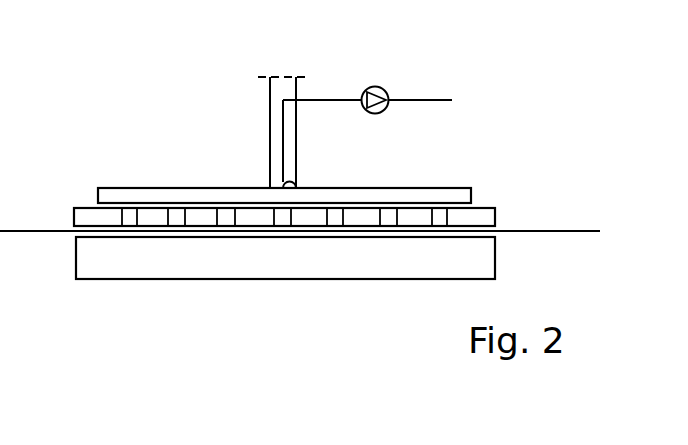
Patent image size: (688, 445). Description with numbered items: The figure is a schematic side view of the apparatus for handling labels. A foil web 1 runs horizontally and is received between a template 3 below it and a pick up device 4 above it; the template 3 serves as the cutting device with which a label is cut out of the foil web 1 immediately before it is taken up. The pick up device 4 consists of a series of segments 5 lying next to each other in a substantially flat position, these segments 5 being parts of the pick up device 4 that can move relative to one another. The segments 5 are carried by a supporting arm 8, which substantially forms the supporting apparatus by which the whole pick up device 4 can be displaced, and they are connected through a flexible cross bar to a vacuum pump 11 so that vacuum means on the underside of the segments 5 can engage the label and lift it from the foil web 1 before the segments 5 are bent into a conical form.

The foil web 1 is at (561, 216).
The template 3 is at (362, 279).
The pick up device 4 is at (472, 161).
The segments 5 is at (203, 217).
The supporting arm 8 is at (270, 116).
The vacuum pump 11 is at (375, 86).